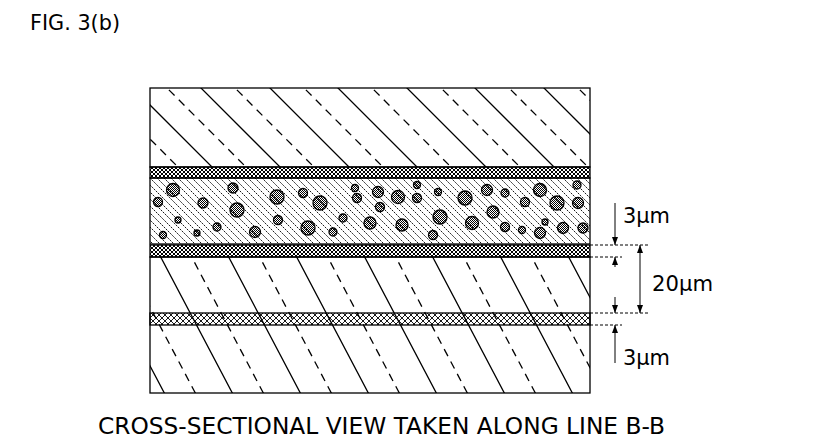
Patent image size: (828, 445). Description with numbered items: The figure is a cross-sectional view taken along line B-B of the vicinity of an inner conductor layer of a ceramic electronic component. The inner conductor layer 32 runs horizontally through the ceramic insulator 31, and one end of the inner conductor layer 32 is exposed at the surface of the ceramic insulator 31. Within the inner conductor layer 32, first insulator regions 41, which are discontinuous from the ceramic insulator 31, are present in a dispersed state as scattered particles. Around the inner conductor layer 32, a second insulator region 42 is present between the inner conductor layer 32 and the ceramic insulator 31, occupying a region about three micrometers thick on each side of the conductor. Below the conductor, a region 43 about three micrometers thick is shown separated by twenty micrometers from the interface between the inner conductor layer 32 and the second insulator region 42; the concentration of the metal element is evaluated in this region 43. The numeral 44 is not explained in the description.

The ceramic insulator 31 is at (162, 128).
The second insulator region 42 is at (150, 167).
The first insulator regions 41 is at (154, 201).
The inner conductor layer 32 is at (152, 220).
The base layer 44 is at (242, 256).
The region 43 is at (152, 315).